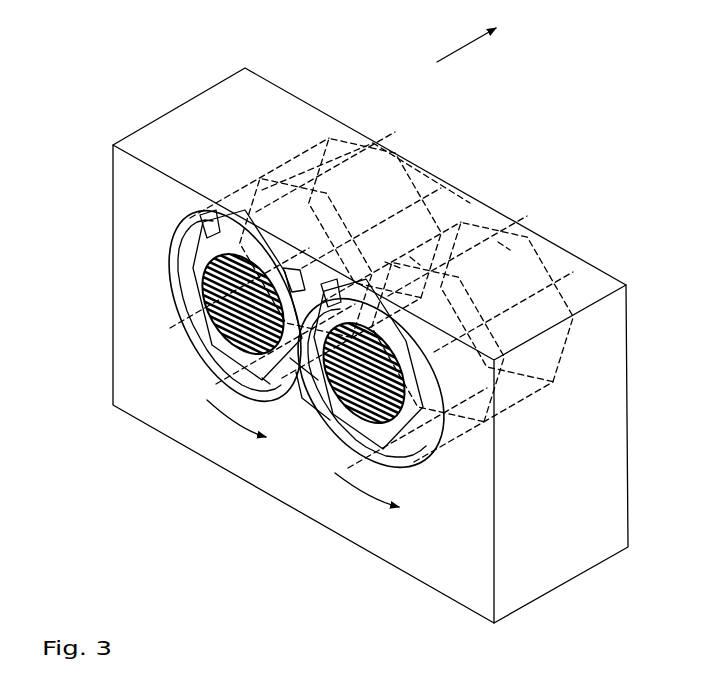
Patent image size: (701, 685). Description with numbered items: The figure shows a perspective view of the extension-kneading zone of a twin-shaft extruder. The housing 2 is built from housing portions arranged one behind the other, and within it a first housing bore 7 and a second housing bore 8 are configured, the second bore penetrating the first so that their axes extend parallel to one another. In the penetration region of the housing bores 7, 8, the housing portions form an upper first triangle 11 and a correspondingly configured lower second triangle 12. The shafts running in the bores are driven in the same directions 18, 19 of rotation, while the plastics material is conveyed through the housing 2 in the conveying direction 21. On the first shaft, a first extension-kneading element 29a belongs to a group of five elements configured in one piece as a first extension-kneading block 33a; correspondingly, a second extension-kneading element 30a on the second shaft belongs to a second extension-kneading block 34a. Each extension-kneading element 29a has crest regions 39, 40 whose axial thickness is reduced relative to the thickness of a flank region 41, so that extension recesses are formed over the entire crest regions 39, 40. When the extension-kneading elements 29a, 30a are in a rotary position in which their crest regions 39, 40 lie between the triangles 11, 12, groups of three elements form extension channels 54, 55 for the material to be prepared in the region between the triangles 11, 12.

The housing 2 is at (185, 95).
The first housing bore 7 is at (177, 270).
The second housing bore 8 is at (422, 450).
The upper first triangle 11 is at (297, 272).
The lower second triangle 12 is at (302, 398).
The direction of rotation 18 is at (243, 427).
The direction of rotation 19 is at (370, 497).
The conveying direction 21 is at (452, 57).
The first extension-kneading element 29a is at (200, 315).
The second extension-kneading element 30a is at (399, 432).
The first extension-kneading block 33a is at (374, 142).
The second extension-kneading block 34a is at (499, 241).
The crest region 39 is at (262, 207).
The crest region 40 is at (258, 380).
The flank region 41 is at (218, 243).
The extension channel 54 is at (385, 262).
The extension channel 55 is at (410, 257).